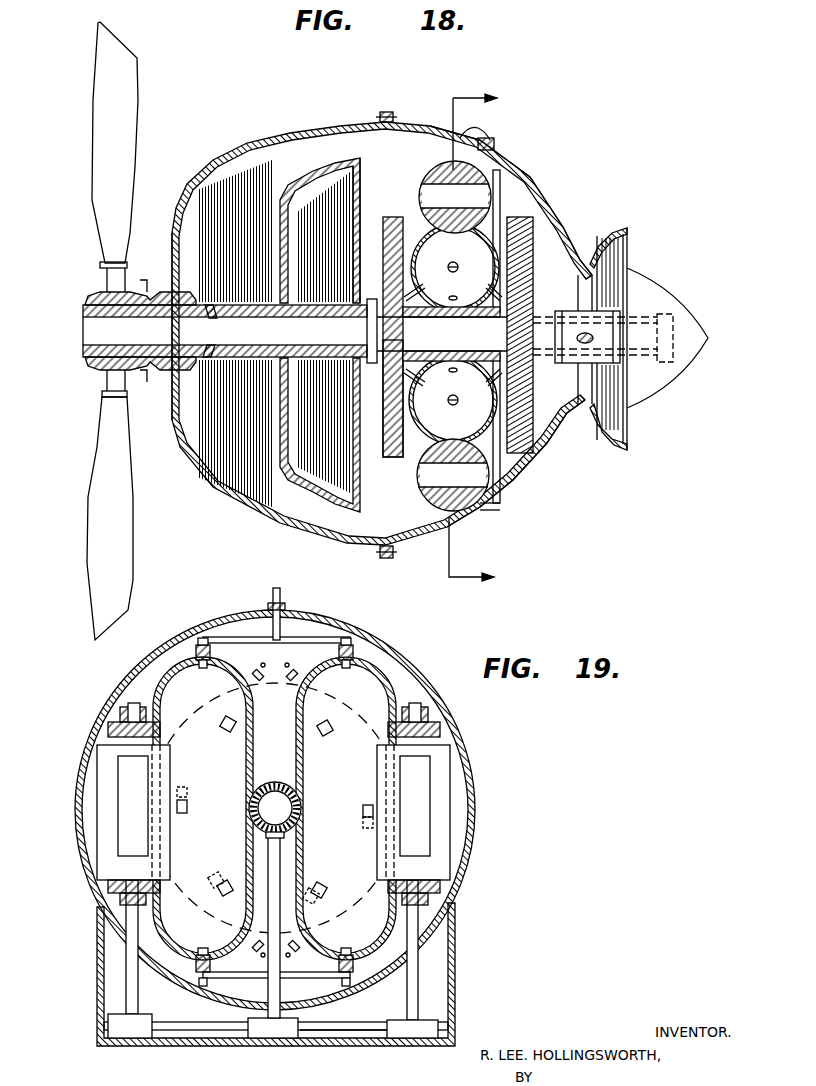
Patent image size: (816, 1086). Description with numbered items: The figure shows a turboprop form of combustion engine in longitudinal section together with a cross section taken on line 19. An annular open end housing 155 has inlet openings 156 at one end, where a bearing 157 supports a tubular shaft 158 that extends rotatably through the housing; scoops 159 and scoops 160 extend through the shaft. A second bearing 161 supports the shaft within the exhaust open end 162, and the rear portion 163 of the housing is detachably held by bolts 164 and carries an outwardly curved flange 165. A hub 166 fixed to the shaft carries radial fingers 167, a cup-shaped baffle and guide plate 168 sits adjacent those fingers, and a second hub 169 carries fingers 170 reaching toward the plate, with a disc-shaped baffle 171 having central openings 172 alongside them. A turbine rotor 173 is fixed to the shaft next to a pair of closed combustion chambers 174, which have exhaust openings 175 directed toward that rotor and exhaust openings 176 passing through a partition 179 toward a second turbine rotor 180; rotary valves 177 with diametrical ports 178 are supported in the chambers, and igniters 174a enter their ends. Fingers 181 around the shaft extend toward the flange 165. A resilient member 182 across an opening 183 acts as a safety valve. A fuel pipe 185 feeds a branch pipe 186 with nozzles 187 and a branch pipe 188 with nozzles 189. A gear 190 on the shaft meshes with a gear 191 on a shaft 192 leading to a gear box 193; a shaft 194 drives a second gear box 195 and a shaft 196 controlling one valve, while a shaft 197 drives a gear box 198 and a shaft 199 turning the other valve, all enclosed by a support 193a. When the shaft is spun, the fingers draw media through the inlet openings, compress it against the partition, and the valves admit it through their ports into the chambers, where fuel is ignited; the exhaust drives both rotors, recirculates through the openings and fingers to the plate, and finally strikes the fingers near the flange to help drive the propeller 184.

In FIG. 18, the section line 19 is at (482, 341).
In FIG. 18, the annular open end housing 155 is at (287, 131).
In FIG. 18, the inlet openings 156 is at (177, 250).
In FIG. 18, the bearing 157 is at (163, 292).
In FIG. 18, the tubular shaft 158 is at (297, 312).
In FIG. 18, the scoops 159 is at (210, 318).
In FIG. 18, the scoops 160 is at (373, 344).
In FIG. 18, the second bearing 161 is at (588, 322).
In FIG. 18, the exhaust open end 162 is at (580, 291).
In FIG. 18, the rear portion of housing 163 is at (532, 188).
In FIG. 19, the rear portion of housing 163 is at (470, 782).
In FIG. 18, the bolts 164 is at (388, 112).
In FIG. 18, the outwardly curved flange 165 is at (613, 228).
In FIG. 18, the hub 166 is at (180, 315).
In FIG. 18, the fingers 167 is at (259, 190).
In FIG. 18, the cup-shaped baffle and guide plate 168 is at (338, 163).
In FIG. 18, the second hub 169 is at (333, 297).
In FIG. 18, the fingers 170 is at (385, 213).
In FIG. 18, the disc-shaped baffle 171 is at (358, 213).
In FIG. 18, the centrally positioned openings 172 is at (353, 252).
In FIG. 18, the turbine rotor 173 is at (384, 458).
In FIG. 18, the closed combustion chambers 174 is at (414, 267).
In FIG. 19, the closed combustion chambers 174 is at (160, 672).
In FIG. 19, the igniters 174a is at (247, 677).
In FIG. 18, the exhaust openings 175 is at (488, 284).
In FIG. 18, the exhaust openings 176 is at (461, 265).
In FIG. 19, the exhaust openings 176 is at (188, 805).
In FIG. 18, the rotary valves 177 is at (445, 165).
In FIG. 19, the rotary valves 177 is at (103, 784).
In FIG. 18, the ports 178 is at (428, 194).
In FIG. 19, the ports 178 is at (123, 835).
In FIG. 18, the partition 179 is at (497, 480).
In FIG. 18, the second turbine rotor 180 is at (528, 428).
In FIG. 18, the fingers 181 is at (610, 388).
In FIG. 18, the resilient member 182 is at (481, 132).
In FIG. 18, the opening 183 is at (494, 151).
In FIG. 18, the propeller 184 is at (98, 478).
In FIG. 19, the fuel pipe 185 is at (268, 607).
In FIG. 19, the branch pipe 186 is at (307, 637).
In FIG. 19, the nozzles 187 is at (203, 636).
In FIG. 19, the branch pipe 188 is at (303, 993).
In FIG. 19, the nozzles 189 is at (198, 980).
In FIG. 19, the gear 190 is at (275, 782).
In FIG. 19, the gear 191 is at (262, 838).
In FIG. 19, the shaft 192 is at (272, 900).
In FIG. 19, the gear box 193 is at (280, 1032).
In FIG. 19, the support 193a is at (98, 1025).
In FIG. 19, the shaft 194 is at (345, 1030).
In FIG. 19, the second gear box 195 is at (415, 1032).
In FIG. 19, the shaft 196 is at (416, 990).
In FIG. 19, the shaft 197 is at (207, 1030).
In FIG. 19, the gear box 198 is at (132, 1030).
In FIG. 19, the shaft 199 is at (127, 992).